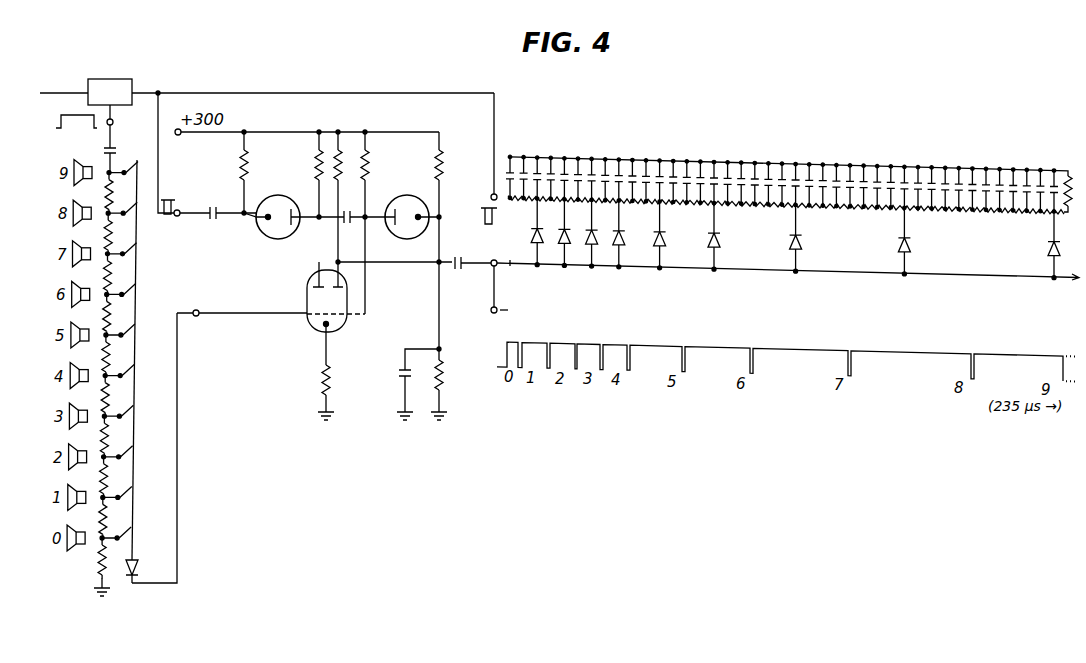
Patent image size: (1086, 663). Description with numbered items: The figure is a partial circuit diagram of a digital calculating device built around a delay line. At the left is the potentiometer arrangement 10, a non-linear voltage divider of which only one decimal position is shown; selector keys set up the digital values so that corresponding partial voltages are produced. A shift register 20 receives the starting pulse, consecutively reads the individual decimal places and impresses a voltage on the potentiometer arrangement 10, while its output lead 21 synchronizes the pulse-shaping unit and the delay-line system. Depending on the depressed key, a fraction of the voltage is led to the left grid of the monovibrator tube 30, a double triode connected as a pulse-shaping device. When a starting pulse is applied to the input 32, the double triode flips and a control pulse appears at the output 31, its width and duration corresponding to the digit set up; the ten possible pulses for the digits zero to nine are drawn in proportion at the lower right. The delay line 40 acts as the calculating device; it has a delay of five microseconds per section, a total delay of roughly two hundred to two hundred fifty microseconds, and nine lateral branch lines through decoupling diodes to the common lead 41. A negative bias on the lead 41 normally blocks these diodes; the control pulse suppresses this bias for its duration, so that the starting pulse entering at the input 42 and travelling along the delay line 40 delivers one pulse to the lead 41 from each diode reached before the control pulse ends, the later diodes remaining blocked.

The potentiometer arrangement 10 is at (122, 123).
The shift register 20 is at (133, 84).
The output lead of the shift register 21 is at (171, 153).
The monovibrator tube 30 is at (313, 330).
The output 31 is at (473, 262).
The input 32 is at (186, 218).
The delay line 40 is at (790, 166).
The lead 41 is at (845, 277).
The input 42 is at (491, 197).